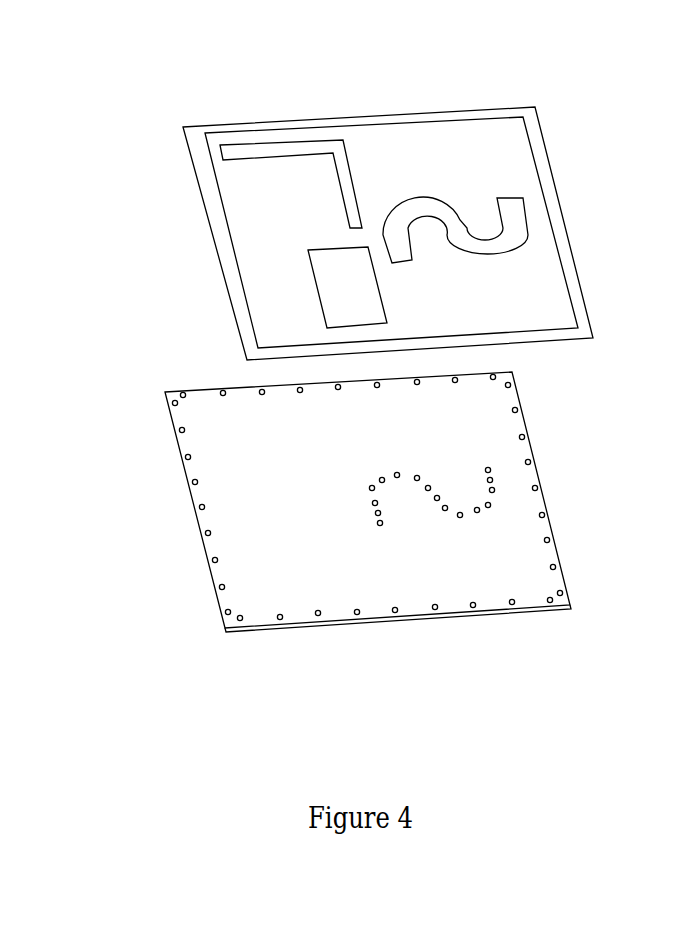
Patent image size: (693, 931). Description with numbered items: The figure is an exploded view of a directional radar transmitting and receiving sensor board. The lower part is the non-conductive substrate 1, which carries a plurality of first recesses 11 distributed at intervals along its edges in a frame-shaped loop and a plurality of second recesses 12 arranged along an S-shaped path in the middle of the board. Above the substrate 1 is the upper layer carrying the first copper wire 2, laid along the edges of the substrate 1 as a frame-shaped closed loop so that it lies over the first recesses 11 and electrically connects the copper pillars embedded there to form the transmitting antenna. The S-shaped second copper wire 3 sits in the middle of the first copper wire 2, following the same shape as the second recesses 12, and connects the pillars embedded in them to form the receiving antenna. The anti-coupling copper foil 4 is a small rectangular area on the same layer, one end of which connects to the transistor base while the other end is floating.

The non-conductive substrate 1 is at (253, 448).
The first copper wire 2 is at (192, 142).
The second copper wire 3 is at (519, 215).
The anti-coupling copper foil 4 is at (338, 295).
The first recesses 11 is at (522, 438).
The second recesses 12 is at (498, 490).